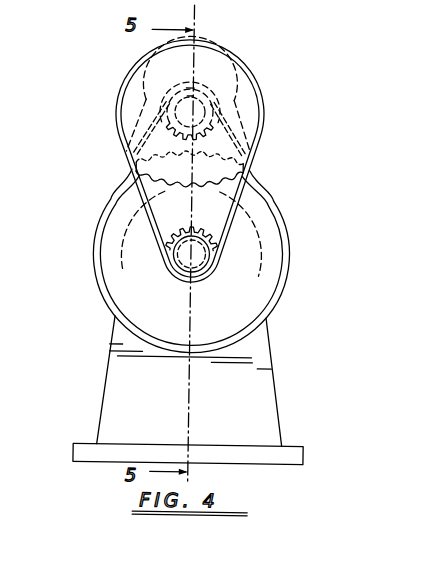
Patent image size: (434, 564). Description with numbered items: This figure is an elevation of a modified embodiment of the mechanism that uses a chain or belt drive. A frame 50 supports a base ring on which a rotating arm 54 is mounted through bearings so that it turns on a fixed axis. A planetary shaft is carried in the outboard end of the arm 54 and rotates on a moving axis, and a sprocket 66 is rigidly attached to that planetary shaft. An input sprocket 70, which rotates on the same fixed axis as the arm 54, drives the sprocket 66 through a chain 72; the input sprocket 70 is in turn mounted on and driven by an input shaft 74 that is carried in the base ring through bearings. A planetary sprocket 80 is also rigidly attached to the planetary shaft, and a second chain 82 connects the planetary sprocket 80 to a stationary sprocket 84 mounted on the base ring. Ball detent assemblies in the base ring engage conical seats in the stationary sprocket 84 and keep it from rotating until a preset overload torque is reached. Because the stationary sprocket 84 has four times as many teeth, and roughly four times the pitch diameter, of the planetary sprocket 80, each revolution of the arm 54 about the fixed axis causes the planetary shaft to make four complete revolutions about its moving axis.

The frame 50 is at (279, 398).
The rotating arm 54 is at (255, 225).
The sprocket 66 is at (236, 77).
The input sprocket 70 is at (163, 265).
The chain 72 is at (239, 192).
The input shaft 74 is at (189, 270).
The planetary sprocket 80 is at (163, 102).
The chain 82 is at (133, 140).
The stationary sprocket 84 is at (274, 290).